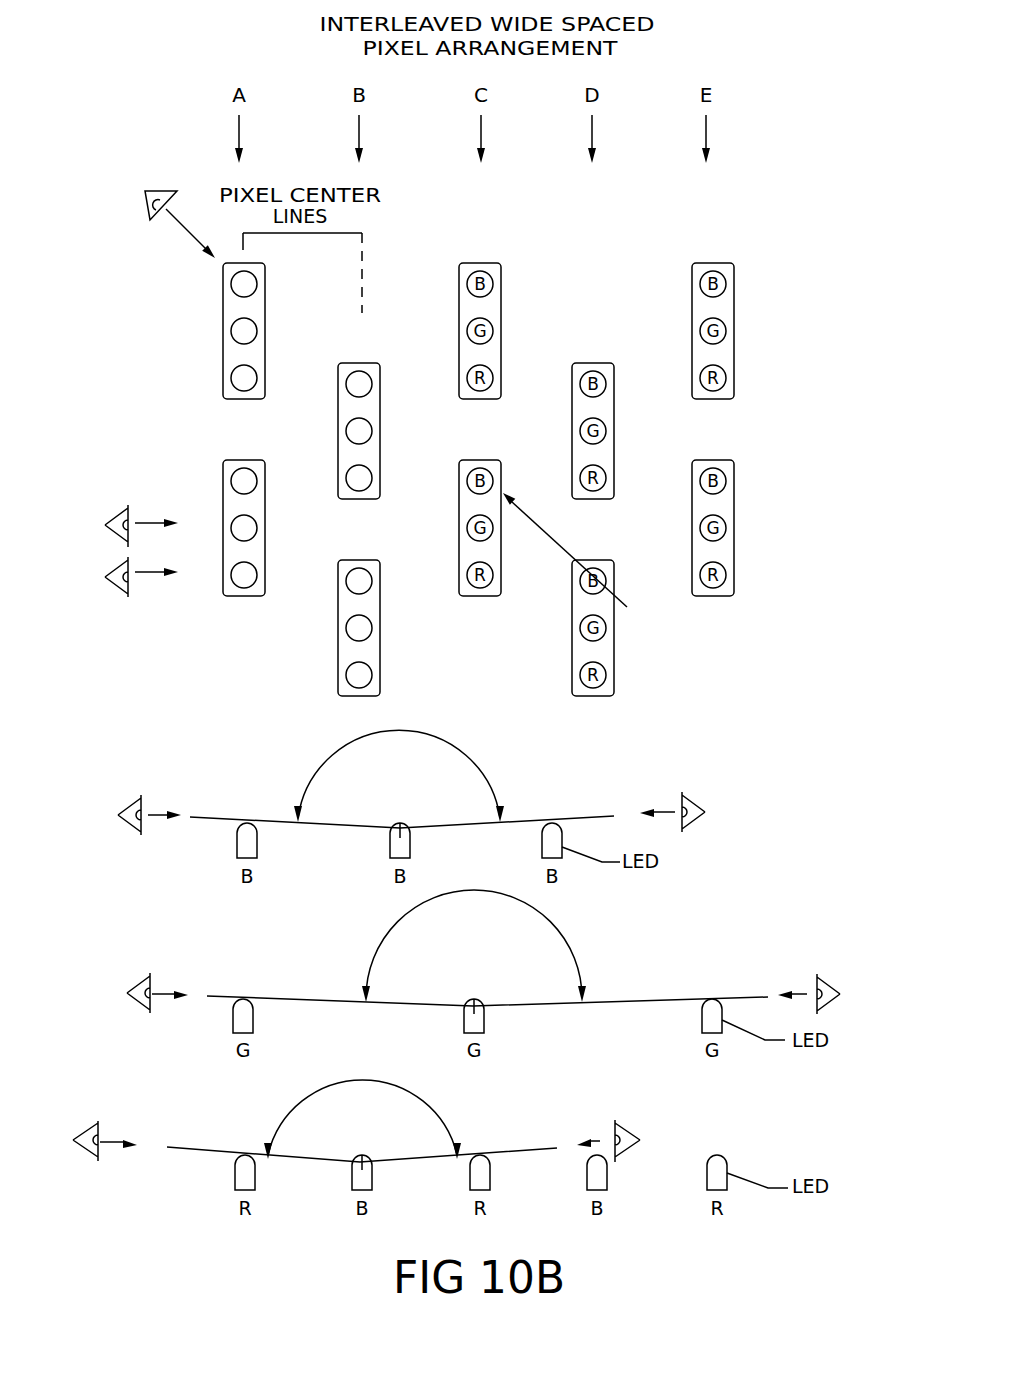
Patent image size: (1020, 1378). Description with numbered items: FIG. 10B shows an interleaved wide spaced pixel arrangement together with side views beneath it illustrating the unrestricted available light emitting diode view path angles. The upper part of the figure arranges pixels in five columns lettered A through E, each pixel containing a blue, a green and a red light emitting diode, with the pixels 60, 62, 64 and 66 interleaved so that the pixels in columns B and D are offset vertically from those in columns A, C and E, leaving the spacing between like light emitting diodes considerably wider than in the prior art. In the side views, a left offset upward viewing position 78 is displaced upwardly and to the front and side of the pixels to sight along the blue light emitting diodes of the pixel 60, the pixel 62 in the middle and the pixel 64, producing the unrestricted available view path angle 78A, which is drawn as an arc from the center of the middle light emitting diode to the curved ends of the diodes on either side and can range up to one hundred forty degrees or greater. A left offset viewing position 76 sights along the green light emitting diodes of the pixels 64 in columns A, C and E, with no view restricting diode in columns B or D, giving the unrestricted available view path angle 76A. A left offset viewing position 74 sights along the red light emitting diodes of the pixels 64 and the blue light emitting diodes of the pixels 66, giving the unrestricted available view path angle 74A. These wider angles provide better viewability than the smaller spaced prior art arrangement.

The pixel 60 is at (192, 330).
The pixel 62 is at (192, 425).
The pixel 64 is at (196, 498).
The pixel 66 is at (310, 628).
The left offset viewing position 74 is at (112, 592).
The left offset viewing position 76 is at (115, 512).
The left offset upward viewing position 78 is at (158, 188).
The unrestricted available LED view path angle 74A is at (440, 1115).
The unrestricted available LED view path angle 76A is at (568, 952).
The unrestricted available LED view path angle 78A is at (480, 768).